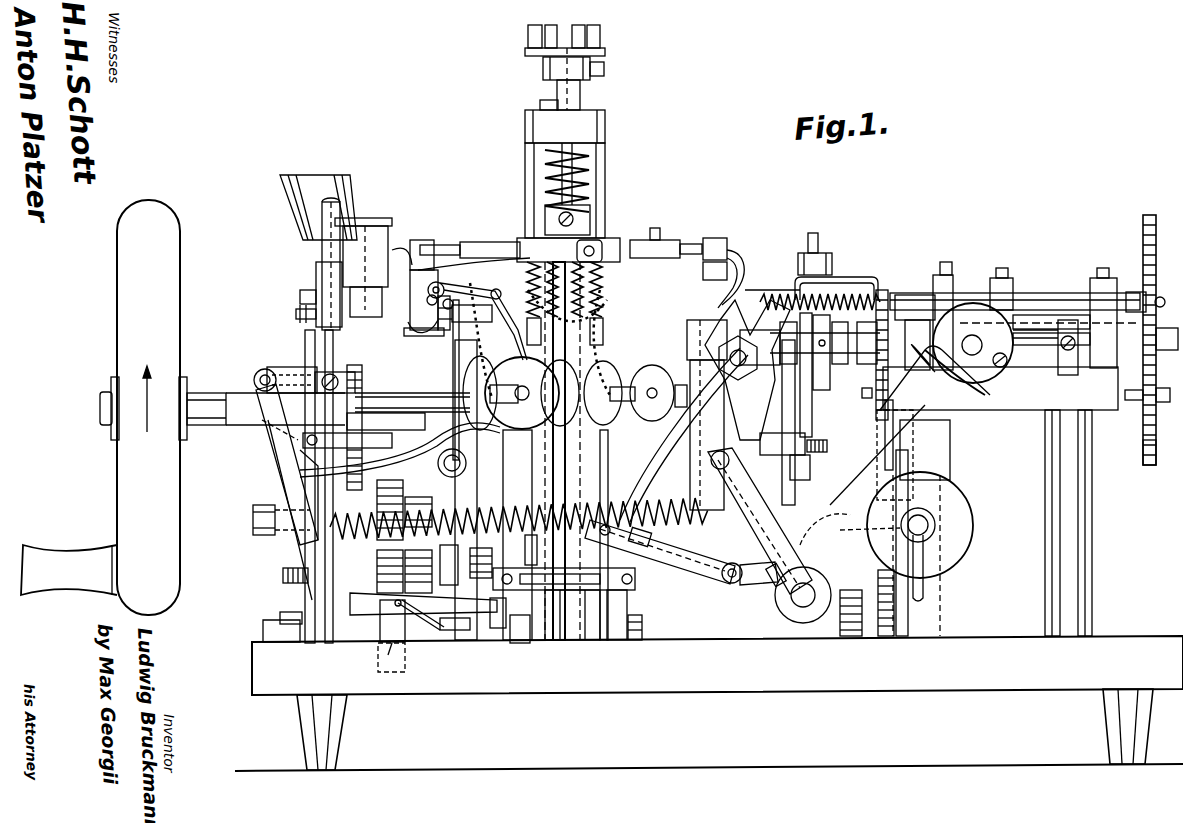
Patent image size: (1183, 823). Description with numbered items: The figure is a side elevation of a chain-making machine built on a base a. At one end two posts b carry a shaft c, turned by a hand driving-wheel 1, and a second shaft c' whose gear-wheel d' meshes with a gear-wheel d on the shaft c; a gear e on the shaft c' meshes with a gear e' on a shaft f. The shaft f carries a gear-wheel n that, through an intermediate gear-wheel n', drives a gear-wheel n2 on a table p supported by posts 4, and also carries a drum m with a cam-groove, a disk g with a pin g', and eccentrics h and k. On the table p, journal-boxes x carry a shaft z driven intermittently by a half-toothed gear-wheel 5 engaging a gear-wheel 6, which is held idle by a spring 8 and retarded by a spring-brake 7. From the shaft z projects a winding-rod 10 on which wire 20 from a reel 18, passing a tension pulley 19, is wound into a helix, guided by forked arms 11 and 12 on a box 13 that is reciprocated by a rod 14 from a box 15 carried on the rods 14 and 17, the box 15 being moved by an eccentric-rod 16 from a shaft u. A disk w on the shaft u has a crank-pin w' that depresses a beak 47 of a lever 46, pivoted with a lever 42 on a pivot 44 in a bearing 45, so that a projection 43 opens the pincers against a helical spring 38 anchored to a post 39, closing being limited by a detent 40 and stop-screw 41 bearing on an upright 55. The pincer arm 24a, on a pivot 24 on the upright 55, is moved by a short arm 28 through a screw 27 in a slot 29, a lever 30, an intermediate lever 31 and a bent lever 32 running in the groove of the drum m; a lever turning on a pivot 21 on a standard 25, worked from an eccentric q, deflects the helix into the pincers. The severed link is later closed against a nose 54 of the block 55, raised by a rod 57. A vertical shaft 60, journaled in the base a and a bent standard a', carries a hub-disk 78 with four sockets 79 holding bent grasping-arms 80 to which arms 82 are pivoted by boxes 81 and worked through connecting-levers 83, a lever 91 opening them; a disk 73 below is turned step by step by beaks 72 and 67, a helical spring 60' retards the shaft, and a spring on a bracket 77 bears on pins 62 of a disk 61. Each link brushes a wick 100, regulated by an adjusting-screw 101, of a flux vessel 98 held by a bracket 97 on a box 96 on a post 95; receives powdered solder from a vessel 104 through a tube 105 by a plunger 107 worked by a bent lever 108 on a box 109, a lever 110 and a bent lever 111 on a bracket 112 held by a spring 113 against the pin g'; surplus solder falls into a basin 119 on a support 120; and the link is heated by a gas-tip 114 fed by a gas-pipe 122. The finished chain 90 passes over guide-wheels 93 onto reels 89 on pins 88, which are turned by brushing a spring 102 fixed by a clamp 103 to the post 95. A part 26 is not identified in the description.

The driving-wheel 1 is at (123, 407).
The base a is at (705, 691).
The bent standard a' is at (580, 190).
The posts b is at (280, 548).
The shaft c is at (348, 408).
The shaft c' is at (344, 510).
The gear-wheel d is at (360, 417).
The gear-wheel d' is at (400, 463).
The gear e is at (399, 506).
The gear e' is at (378, 636).
The shaft f is at (411, 567).
The disk g is at (437, 571).
The pin g' is at (471, 565).
The eccentric h is at (520, 643).
The eccentric k is at (636, 640).
The drum m is at (850, 607).
The gear-wheel n is at (893, 562).
The intermediate gear-wheel n' is at (866, 435).
The gear-wheel n2 is at (882, 290).
The table p is at (1106, 400).
The eccentric q is at (824, 390).
The shaft u is at (972, 350).
The disk w is at (973, 323).
The crank-pin w' is at (1000, 378).
The journal-boxes x is at (1053, 308).
The shaft z is at (1015, 294).
The posts 4 is at (1068, 523).
The gear-wheel 5 is at (1156, 432).
The gear-wheel 6 is at (1156, 238).
The spring-brake 7 is at (1150, 378).
The spring 8 is at (1150, 340).
The winding-rod 10 is at (870, 286).
The guide-arm 11 is at (850, 277).
The guide-arm 12 is at (905, 295).
The box 13 is at (948, 275).
The rod 14 is at (1030, 320).
The box 15 is at (1068, 368).
The eccentric-rod 16 is at (1048, 345).
The rod 17 is at (1030, 366).
The reel 18 is at (970, 520).
The pulley 19 is at (864, 396).
The wire 20 is at (778, 290).
The pivot 21 is at (820, 253).
The pivot 24 is at (737, 279).
The grasping-arm 24a is at (660, 480).
The standard 25 is at (740, 392).
The link 26 is at (710, 436).
The screw 27 is at (631, 485).
The short arm 28 is at (660, 548).
The slot 29 is at (661, 485).
The lever 30 is at (706, 555).
The intermediate lever 31 is at (742, 584).
The bent lever 32 is at (850, 529).
The helical spring 38 is at (525, 505).
The post 39 is at (318, 588).
The detent 40 is at (795, 455).
The stop-screw 41 is at (827, 446).
The lever 42 is at (760, 521).
The projection 43 is at (726, 456).
The pivot 44 is at (800, 600).
The bearing 45 is at (806, 625).
The lever 46 is at (878, 470).
The beak 47 is at (935, 377).
The nose 54 is at (738, 350).
The upright 55 is at (741, 415).
The rod 57 is at (661, 463).
The vertical shaft 60 is at (594, 79).
The helical spring 60' is at (534, 177).
The disk 61 is at (543, 69).
The pins 62 is at (528, 30).
The beak 67 is at (498, 630).
The beak 72 is at (620, 640).
The disk 73 is at (564, 604).
The bracket 77 is at (538, 103).
The hub-disk 78 is at (590, 213).
The sockets 79 is at (493, 242).
The grasping-arm 80 is at (688, 230).
The box 81 is at (717, 238).
The grasping-arm 82 is at (603, 252).
The connecting-lever 83 is at (506, 310).
The pins 88 is at (520, 388).
The reels 89 is at (632, 386).
The chain 90 is at (572, 340).
The lever 91 is at (541, 548).
The guide-wheels 93 is at (446, 272).
The post 95 is at (322, 250).
The box 96 is at (316, 292).
The bracket 97 is at (392, 250).
The vessel 98 is at (365, 228).
The wick 100 is at (424, 308).
The adjusting-screw 101 is at (430, 243).
The spring 102 is at (400, 450).
The clamp 103 is at (300, 455).
The vessel 104 is at (322, 178).
The tube 105 is at (365, 312).
The plunger 107 is at (296, 313).
The bent lever 108 is at (310, 370).
The box 109 is at (354, 382).
The lever 110 is at (280, 430).
The bent lever 111 is at (408, 630).
The bracket 112 is at (468, 630).
The spring 113 is at (425, 625).
The gas-tip 114 is at (465, 309).
The basin 119 is at (408, 413).
The support 120 is at (303, 442).
The gas-pipe 122 is at (452, 352).